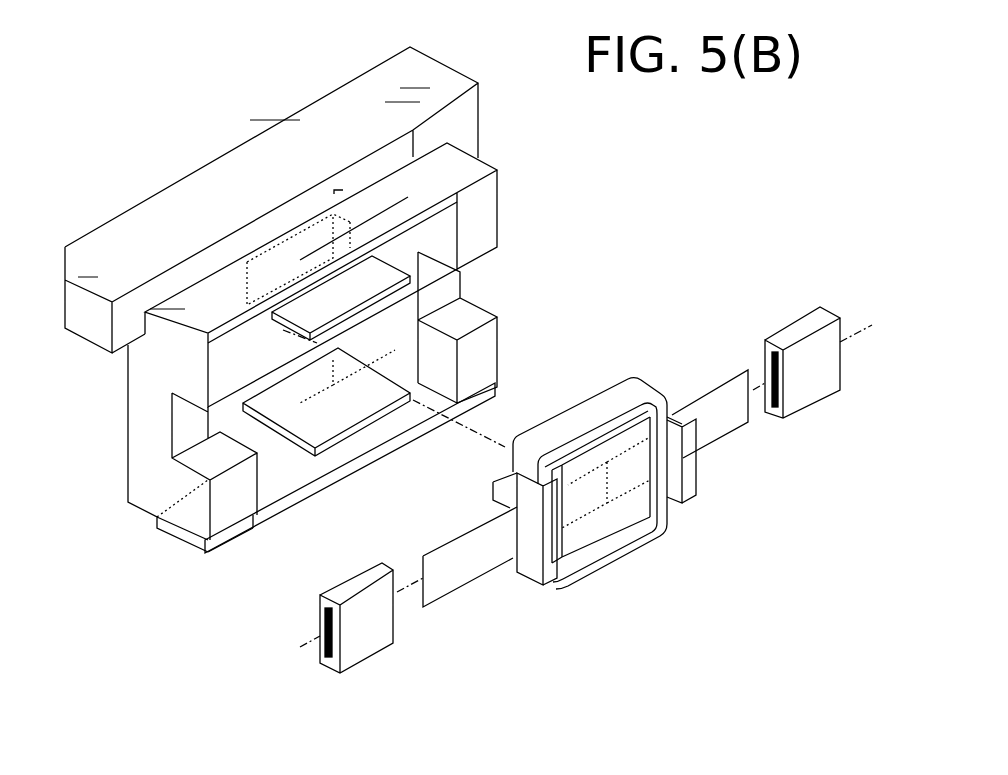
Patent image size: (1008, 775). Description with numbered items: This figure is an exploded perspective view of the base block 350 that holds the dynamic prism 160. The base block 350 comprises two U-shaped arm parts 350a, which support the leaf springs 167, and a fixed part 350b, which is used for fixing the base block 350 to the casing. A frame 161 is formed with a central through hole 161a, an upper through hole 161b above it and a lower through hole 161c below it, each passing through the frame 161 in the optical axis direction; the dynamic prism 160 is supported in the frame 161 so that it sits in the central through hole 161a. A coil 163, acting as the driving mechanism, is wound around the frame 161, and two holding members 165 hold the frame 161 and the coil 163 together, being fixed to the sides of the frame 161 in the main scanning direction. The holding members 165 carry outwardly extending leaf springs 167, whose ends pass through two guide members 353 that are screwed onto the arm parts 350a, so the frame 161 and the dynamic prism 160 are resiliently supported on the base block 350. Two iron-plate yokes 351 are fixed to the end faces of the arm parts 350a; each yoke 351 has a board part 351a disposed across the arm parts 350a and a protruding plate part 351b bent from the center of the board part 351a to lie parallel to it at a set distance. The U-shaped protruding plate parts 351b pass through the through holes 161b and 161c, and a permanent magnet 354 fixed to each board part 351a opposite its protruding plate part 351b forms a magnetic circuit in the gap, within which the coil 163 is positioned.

The base block 350 is at (133, 503).
The U-shaped arm parts 350a is at (490, 342).
The fixed part 350b is at (127, 229).
The yoke 351 is at (393, 341).
The board part 351a is at (477, 160).
The protruding plate part 351b is at (398, 245).
The permanent magnet 354 is at (288, 308).
The dynamic prism 160 is at (591, 487).
The frame 161 is at (652, 473).
The central through hole 161a is at (640, 467).
The upper through hole 161b is at (638, 396).
The lower through hole 161c is at (602, 558).
The coil 163 is at (556, 427).
The holding members 165 is at (670, 477).
The leaf springs 167 is at (727, 361).
The guide members 353 is at (373, 646).